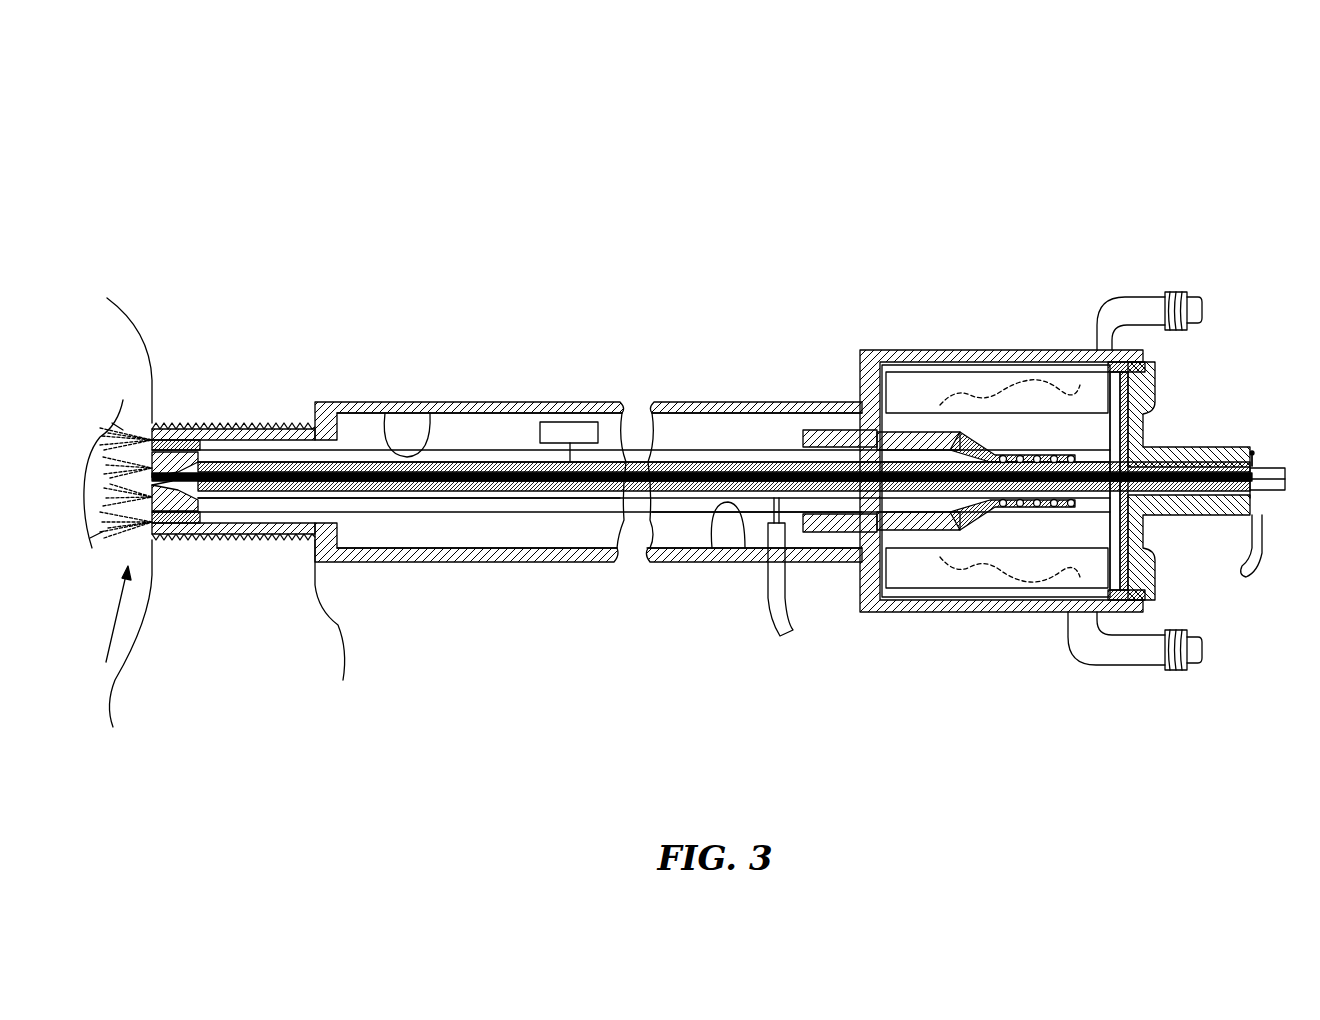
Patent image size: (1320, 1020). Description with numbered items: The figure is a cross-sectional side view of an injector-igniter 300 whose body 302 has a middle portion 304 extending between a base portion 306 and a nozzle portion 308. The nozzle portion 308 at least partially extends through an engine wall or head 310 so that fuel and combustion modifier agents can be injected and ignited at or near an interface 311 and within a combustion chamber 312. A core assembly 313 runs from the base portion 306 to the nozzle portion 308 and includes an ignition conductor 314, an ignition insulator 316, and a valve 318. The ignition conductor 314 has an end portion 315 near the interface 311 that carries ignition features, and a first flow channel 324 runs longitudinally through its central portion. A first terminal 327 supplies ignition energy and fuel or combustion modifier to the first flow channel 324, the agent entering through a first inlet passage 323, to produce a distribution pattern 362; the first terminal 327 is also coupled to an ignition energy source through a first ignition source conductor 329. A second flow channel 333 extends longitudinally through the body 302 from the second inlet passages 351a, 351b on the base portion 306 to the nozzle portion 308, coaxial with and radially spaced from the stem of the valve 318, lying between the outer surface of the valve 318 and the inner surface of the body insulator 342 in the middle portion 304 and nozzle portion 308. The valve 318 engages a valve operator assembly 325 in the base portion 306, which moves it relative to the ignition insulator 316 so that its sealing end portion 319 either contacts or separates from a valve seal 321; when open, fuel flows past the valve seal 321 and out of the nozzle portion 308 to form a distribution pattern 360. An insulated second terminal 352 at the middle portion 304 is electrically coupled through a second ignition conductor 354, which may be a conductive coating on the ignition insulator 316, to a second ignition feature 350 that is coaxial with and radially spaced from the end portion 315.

The injector-igniter 300 is at (562, 180).
The body 302 is at (768, 400).
The middle portion 304 is at (611, 366).
The base portion 306 is at (936, 240).
The nozzle portion 308 is at (287, 368).
The engine wall or head 310 is at (180, 263).
The interface 311 is at (122, 659).
The combustion chamber 312 is at (64, 337).
The core assembly 313 is at (485, 460).
The ignition conductor 314 is at (458, 425).
The end portion 315 is at (158, 423).
The ignition insulator 316 is at (445, 462).
The valve 318 is at (475, 418).
The sealing end portion 319 is at (203, 423).
The valve seal 321 is at (190, 540).
The first inlet passage 323 is at (1265, 465).
The first flow channel 324 is at (1230, 450).
The valve operator assembly 325 is at (947, 380).
The first terminal 327 is at (1265, 497).
The first ignition source conductor 329 is at (1233, 555).
The second flow channel 333 is at (382, 420).
The body insulator 342 is at (672, 533).
The second ignition feature 350 is at (176, 540).
The second inlet passage 351a is at (1147, 295).
The second inlet passage 351b is at (1130, 668).
The insulated second terminal 352 is at (780, 635).
The second ignition conductor 354 is at (376, 500).
The distribution pattern 360 is at (120, 415).
The distribution pattern 362 is at (88, 540).